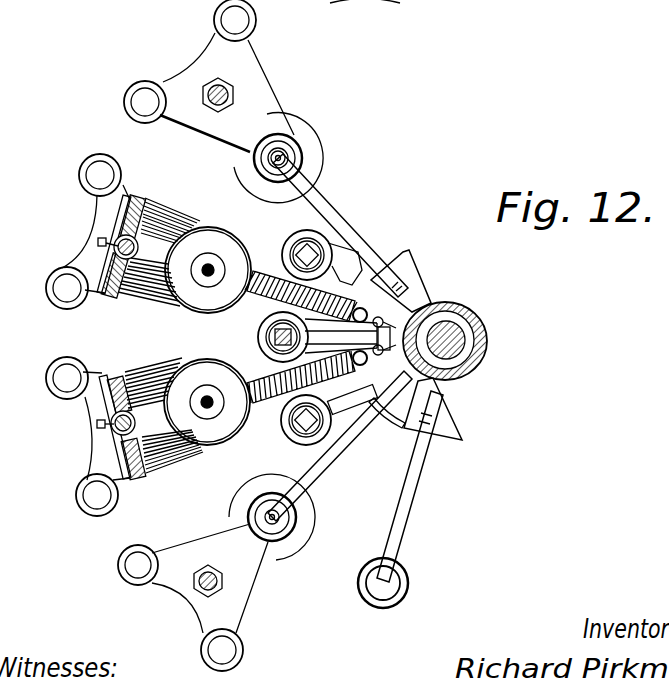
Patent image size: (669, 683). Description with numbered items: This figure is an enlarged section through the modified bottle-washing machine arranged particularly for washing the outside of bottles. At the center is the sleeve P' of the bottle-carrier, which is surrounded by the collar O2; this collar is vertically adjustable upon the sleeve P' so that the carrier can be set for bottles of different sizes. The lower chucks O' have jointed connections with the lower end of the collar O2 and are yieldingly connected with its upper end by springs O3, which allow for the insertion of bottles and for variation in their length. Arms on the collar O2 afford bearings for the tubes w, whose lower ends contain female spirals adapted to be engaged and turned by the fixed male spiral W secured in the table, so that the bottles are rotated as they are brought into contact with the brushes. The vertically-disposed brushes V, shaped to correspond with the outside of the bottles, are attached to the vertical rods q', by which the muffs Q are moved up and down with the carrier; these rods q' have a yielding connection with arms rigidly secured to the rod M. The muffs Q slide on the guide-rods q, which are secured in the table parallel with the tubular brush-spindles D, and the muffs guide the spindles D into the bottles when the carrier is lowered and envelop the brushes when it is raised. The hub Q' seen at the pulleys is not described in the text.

The rod M is at (465, 338).
The sleeve P' is at (433, 281).
The collar O2 is at (440, 390).
The muff Q is at (292, 350).
The pulley hub Q' is at (298, 128).
The lower chuck O' is at (369, 499).
The guide-rod q is at (146, 335).
The vertical rod q' is at (175, 337).
The brush V is at (170, 222).
The tubular brush-spindle D is at (270, 160).
The tube w is at (284, 245).
The male spiral W is at (266, 340).
The spring O3 is at (262, 278).